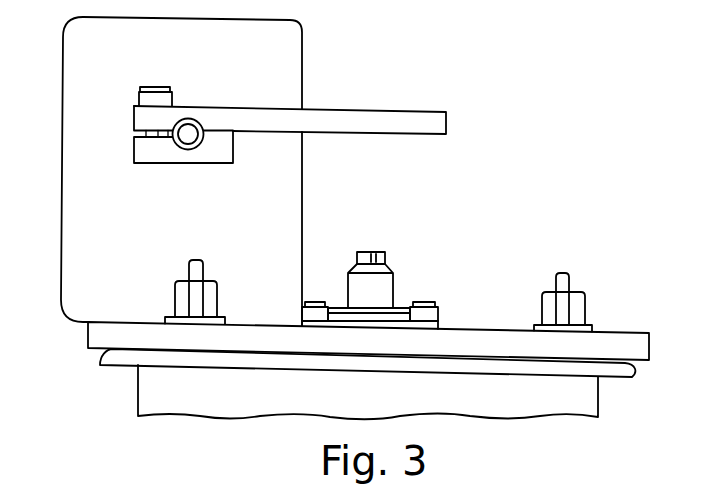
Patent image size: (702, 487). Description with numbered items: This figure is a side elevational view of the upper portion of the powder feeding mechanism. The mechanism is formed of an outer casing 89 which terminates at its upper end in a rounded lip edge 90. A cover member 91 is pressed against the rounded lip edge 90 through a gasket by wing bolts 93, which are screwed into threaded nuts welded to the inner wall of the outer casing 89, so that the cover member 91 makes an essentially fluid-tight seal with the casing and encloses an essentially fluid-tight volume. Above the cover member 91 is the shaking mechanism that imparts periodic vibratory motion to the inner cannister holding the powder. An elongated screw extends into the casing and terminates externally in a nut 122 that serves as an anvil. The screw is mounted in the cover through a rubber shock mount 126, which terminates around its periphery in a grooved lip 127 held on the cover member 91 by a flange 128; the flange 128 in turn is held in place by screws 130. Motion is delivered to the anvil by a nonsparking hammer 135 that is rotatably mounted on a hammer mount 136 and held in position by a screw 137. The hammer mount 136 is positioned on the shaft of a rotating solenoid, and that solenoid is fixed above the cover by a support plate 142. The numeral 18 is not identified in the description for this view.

The panel 18 is at (58, 222).
The outer casing 89 is at (498, 404).
The rounded lip edge 90 is at (607, 372).
The cover member 91 is at (512, 338).
The wing bolts 93 is at (197, 270).
The nut 122 is at (377, 250).
The rubber shock mount 126 is at (385, 283).
The grooved lip 127 is at (395, 318).
The flange 128 is at (437, 325).
The screws 130 is at (432, 312).
The nonsparking hammer 135 is at (402, 122).
The hammer mount 136 is at (156, 157).
The screw 137 is at (157, 100).
The support plate 142 is at (226, 229).